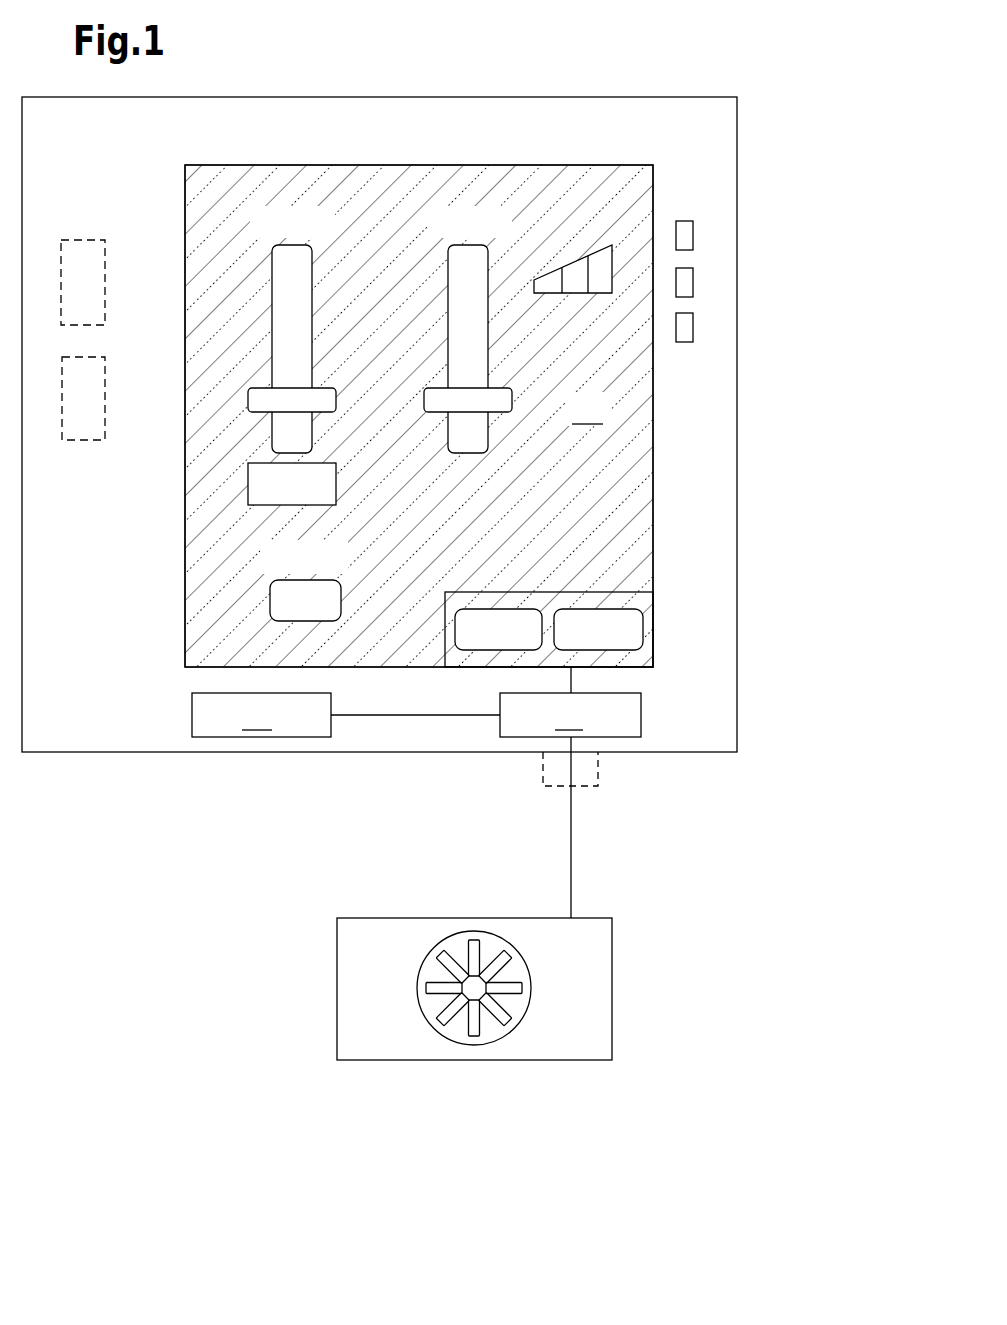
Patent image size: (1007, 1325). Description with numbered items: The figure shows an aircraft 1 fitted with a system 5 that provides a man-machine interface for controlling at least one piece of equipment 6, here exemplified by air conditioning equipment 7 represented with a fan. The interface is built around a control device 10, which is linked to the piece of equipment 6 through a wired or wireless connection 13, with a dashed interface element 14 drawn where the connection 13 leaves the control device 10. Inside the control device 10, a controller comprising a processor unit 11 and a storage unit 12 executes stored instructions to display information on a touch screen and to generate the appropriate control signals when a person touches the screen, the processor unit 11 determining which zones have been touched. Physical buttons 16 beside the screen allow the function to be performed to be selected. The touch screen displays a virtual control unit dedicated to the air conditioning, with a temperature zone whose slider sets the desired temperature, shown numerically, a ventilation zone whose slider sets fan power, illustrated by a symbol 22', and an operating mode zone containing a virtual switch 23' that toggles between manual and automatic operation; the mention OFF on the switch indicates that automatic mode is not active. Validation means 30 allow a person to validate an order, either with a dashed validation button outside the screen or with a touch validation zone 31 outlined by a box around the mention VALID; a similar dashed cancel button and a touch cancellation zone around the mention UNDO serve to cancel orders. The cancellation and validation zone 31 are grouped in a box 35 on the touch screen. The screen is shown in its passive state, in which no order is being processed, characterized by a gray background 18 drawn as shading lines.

The aircraft 1 is at (178, 990).
The system 5 is at (608, 1087).
The piece of equipment 6 is at (650, 1039).
The air conditioning equipment 7 is at (612, 960).
The control device 10 is at (45, 797).
The processor unit 11 is at (570, 702).
The storage unit 12 is at (346, 715).
The connection 13 is at (571, 833).
The interface 14 is at (598, 768).
The buttons 16 is at (693, 327).
The background 18 is at (588, 409).
The symbol 22' is at (612, 206).
The virtual switch 23' is at (234, 606).
The validation means 30 is at (643, 625).
The validation zone 31 is at (652, 636).
The box 35 is at (623, 592).